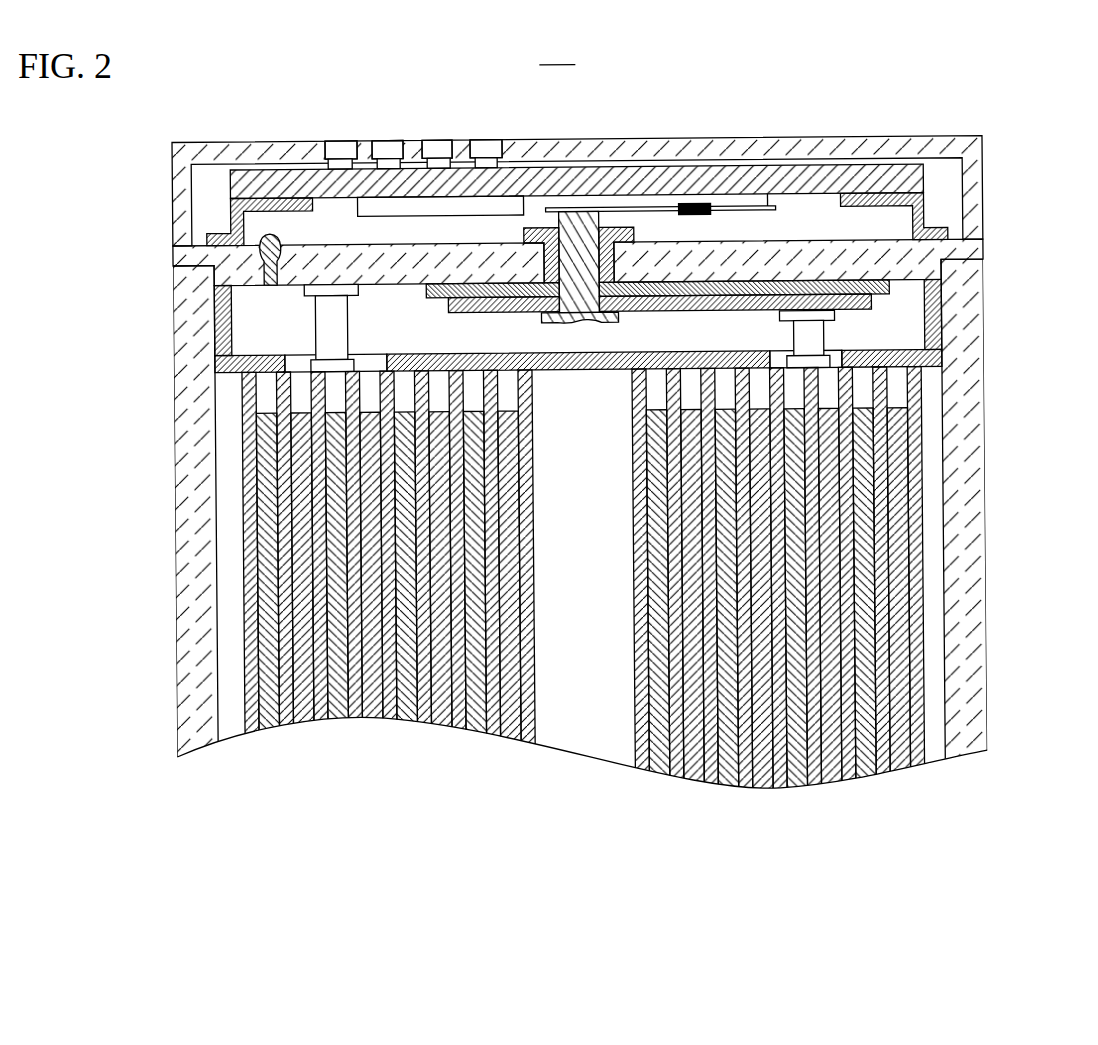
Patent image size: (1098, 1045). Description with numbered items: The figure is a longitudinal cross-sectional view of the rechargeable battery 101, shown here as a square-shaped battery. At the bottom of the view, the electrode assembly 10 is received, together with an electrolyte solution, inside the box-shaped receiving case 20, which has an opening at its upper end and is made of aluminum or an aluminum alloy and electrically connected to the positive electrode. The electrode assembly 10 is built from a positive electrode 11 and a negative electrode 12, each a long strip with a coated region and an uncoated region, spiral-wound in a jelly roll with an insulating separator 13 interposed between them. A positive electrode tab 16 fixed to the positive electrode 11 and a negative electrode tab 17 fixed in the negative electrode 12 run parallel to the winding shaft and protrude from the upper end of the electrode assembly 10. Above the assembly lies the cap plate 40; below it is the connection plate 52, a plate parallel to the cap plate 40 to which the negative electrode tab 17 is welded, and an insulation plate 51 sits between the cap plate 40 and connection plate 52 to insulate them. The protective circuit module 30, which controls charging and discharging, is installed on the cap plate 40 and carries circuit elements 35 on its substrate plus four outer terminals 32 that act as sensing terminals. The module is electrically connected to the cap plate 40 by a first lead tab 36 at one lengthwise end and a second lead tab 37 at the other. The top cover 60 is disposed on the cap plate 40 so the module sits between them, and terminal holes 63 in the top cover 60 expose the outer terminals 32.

The rechargeable battery 101 is at (557, 54).
The electrode assembly 10 is at (663, 584).
The positive electrode 11 is at (900, 596).
The negative electrode 12 is at (865, 654).
The separator 13 is at (910, 550).
The positive electrode tab 16 is at (327, 333).
The negative electrode tab 17 is at (813, 341).
The receiving case 20 is at (972, 412).
The protective circuit module 30 is at (878, 184).
The outer terminals 32 is at (483, 160).
The circuit elements 35 is at (513, 210).
The first lead tab 36 is at (233, 224).
The second lead tab 37 is at (920, 213).
The cap plate 40 is at (227, 283).
The insulation plate 51 is at (887, 289).
The connection plate 52 is at (858, 309).
The top cover 60 is at (972, 177).
The terminal holes 63 is at (386, 160).